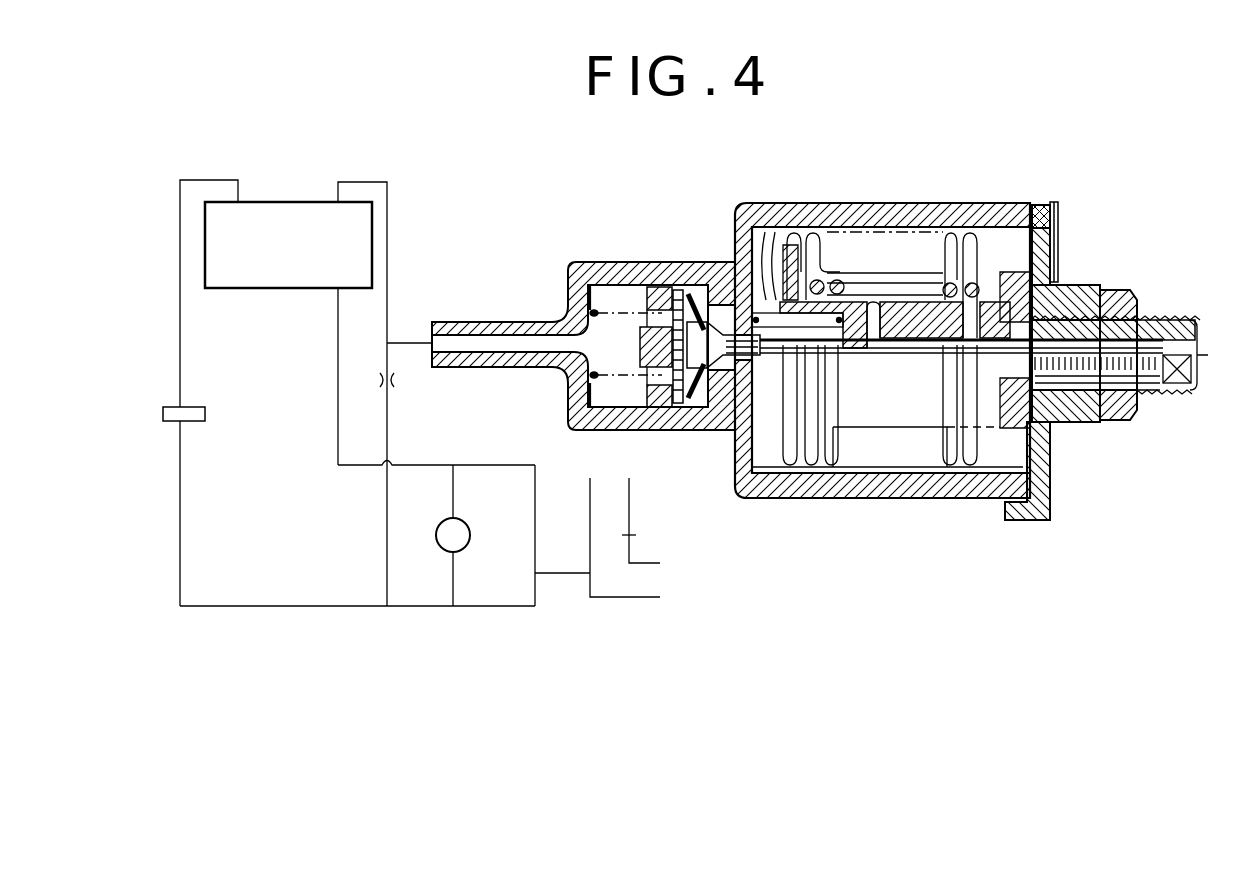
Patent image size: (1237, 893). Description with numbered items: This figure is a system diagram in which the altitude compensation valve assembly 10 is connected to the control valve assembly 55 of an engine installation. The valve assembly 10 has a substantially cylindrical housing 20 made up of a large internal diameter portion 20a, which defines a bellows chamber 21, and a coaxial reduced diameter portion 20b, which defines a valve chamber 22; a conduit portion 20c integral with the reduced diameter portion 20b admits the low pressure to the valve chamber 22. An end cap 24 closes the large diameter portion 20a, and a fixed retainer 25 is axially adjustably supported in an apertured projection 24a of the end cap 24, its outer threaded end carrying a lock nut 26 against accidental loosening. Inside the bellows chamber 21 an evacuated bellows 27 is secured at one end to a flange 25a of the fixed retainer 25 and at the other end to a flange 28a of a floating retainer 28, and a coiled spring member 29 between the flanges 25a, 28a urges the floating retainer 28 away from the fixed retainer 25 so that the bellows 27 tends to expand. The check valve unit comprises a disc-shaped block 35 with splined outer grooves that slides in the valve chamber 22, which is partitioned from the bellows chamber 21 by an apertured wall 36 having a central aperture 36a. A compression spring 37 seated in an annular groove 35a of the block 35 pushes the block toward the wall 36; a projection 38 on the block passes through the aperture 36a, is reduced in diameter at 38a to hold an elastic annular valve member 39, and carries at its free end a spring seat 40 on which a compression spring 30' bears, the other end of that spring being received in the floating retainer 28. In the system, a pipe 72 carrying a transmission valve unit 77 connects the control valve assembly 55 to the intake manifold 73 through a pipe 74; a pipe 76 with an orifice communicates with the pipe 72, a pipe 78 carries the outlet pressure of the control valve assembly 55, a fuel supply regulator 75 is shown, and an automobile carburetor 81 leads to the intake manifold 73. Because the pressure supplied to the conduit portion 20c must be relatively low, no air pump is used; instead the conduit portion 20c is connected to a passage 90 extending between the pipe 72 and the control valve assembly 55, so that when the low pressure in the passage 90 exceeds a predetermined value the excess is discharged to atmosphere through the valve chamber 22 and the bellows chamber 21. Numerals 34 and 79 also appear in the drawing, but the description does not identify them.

The altitude compensation valve assembly 10 is at (924, 187).
The housing 20 is at (990, 202).
The large internal diameter portion 20a is at (876, 210).
The reduced diameter portion 20b is at (620, 430).
The conduit portion 20c is at (505, 370).
The bellows chamber 21 is at (762, 452).
The valve chamber 22 is at (572, 428).
The end cap 24 is at (1057, 435).
The apertured projection 24a is at (1095, 292).
The fixed retainer 25 is at (1050, 280).
The flange 25a is at (1058, 213).
The lock nut 26 is at (1135, 305).
The bellows 27 is at (1005, 203).
The floating retainer 28 is at (790, 215).
The flange 28a is at (832, 215).
The coiled spring member 29 is at (946, 283).
The compression spring 30' is at (775, 226).
The housing wall 34 is at (740, 205).
The disc-shaped block 35 is at (664, 410).
The annular groove 35a is at (641, 292).
The apertured wall 36 is at (718, 432).
The central aperture 36a is at (778, 372).
The compression spring 37 is at (608, 315).
The projection 38 is at (790, 348).
The reduced diameter portion 38a is at (690, 420).
The annular valve member 39 is at (690, 290).
The spring seat 40 is at (704, 265).
The control valve assembly 55 is at (253, 289).
The pipe 72 is at (333, 608).
The intake manifold 73 is at (628, 598).
The pipe 74 is at (563, 575).
The fuel supply regulator 75 is at (471, 535).
The pipe 76 is at (455, 587).
The transmission valve unit 77 is at (205, 408).
The pipe 78 is at (423, 465).
The pump outlet line 79 is at (455, 490).
The automobile carburetor 81 is at (633, 535).
The passage 90 is at (387, 515).